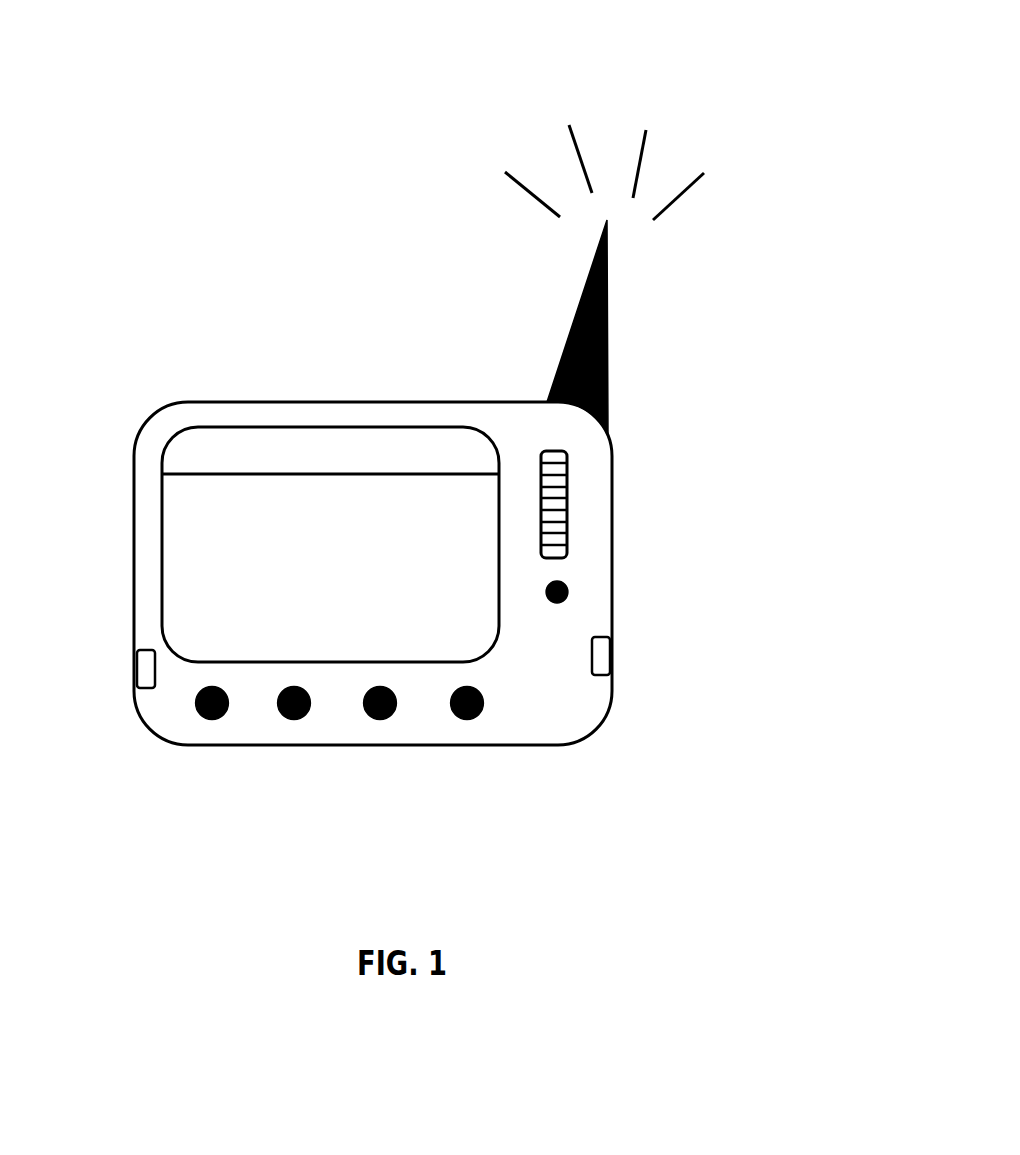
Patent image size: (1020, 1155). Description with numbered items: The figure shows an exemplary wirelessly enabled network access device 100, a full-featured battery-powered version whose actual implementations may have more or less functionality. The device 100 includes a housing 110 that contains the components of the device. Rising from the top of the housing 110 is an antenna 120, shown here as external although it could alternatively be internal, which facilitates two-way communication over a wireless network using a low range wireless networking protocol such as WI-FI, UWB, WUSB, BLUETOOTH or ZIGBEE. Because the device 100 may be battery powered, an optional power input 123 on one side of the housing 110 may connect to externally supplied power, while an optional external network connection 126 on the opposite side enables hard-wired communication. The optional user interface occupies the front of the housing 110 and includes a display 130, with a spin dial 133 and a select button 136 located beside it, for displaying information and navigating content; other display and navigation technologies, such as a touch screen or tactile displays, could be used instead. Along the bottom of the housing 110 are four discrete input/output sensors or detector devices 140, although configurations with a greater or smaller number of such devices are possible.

The wirelessly enabled network access device 100 is at (560, 46).
The housing 110 is at (348, 400).
The antenna 120 is at (610, 359).
The power input 123 is at (602, 660).
The external network connection 126 is at (147, 667).
The display 130 is at (183, 517).
The spin dial 133 is at (568, 483).
The select button 136 is at (568, 592).
The input/output sensors or detector devices 140 is at (223, 715).